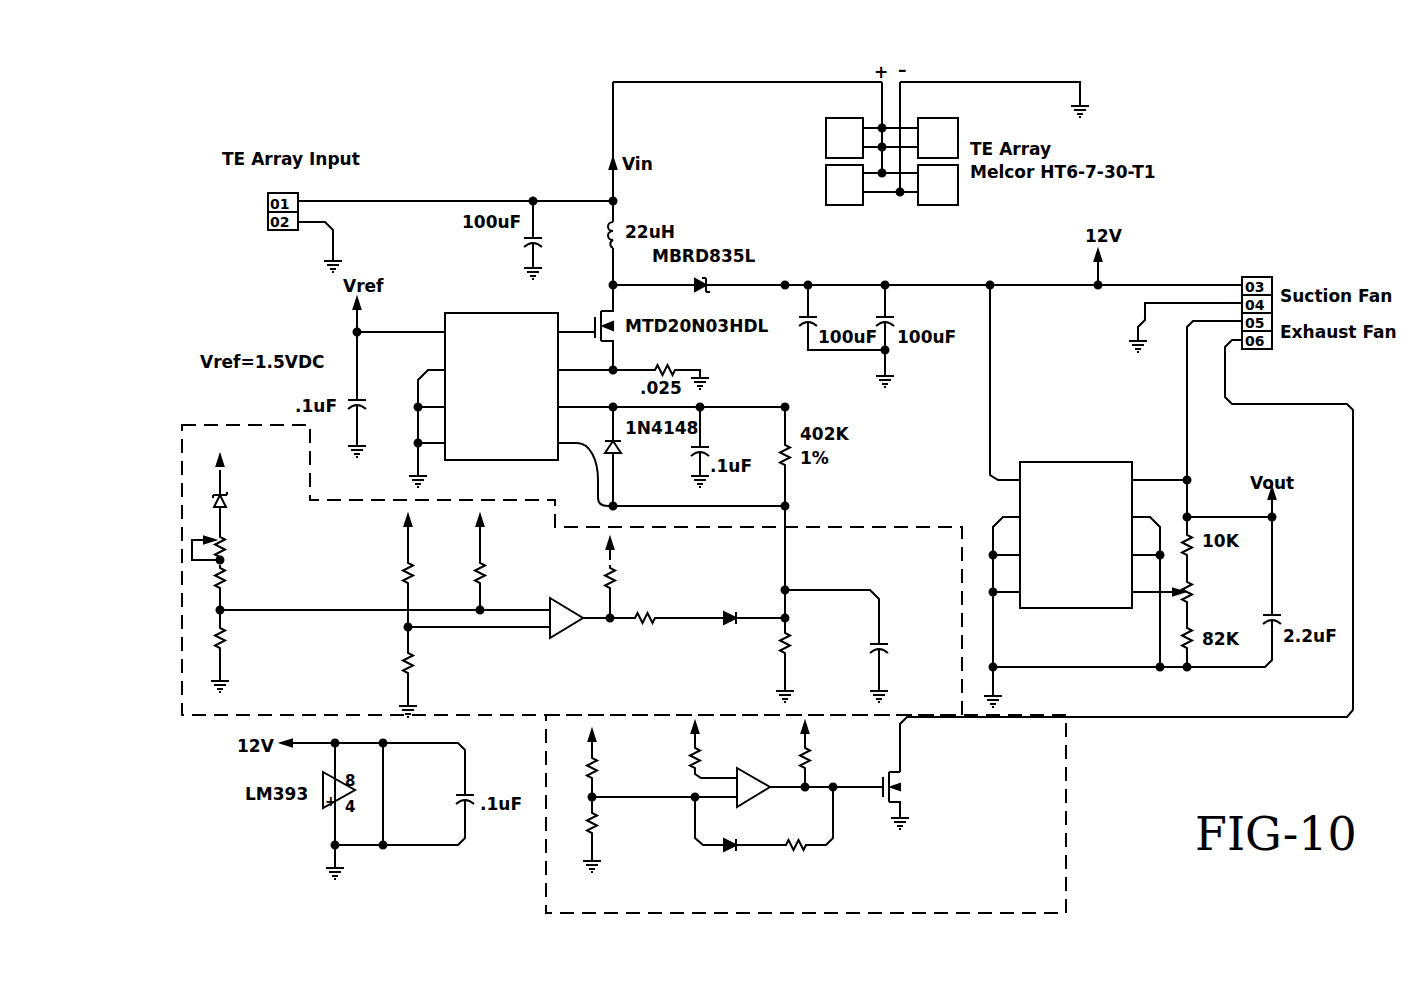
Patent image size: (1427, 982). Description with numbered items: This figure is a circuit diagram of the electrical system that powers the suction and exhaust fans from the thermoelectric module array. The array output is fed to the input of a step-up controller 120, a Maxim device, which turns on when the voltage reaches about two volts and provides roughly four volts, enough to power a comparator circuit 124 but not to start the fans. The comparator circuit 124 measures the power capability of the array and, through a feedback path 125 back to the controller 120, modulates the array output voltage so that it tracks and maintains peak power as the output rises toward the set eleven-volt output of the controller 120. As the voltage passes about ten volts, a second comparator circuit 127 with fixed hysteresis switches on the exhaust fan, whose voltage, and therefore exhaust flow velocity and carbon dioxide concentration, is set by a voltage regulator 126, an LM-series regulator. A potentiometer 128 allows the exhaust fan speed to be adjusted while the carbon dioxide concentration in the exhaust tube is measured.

The step-up controller 120 is at (503, 313).
The comparator circuit 124 is at (838, 527).
The feedback path 125 is at (583, 447).
The voltage regulator 126 is at (1045, 462).
The second comparator circuit 127 is at (1066, 800).
The potentiometer 128 is at (1192, 579).